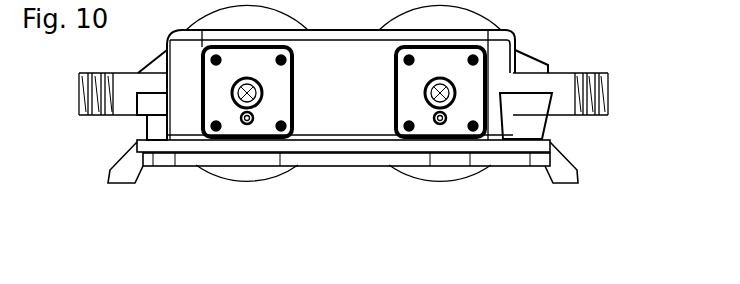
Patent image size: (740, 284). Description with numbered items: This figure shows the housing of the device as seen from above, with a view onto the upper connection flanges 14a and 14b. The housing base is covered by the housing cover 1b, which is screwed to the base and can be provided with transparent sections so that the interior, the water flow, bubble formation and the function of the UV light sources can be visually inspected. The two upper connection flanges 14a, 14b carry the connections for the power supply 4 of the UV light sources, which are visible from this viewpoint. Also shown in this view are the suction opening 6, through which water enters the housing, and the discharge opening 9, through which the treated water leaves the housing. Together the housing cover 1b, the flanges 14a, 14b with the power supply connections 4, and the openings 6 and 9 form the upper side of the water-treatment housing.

The housing cover 1b is at (345, 150).
The upper connection flange 14a is at (230, 122).
The upper connection flange 14b is at (470, 78).
The connections for the power supply 4 is at (425, 91).
The discharge opening 9 is at (250, 123).
The suction opening 6 is at (444, 124).